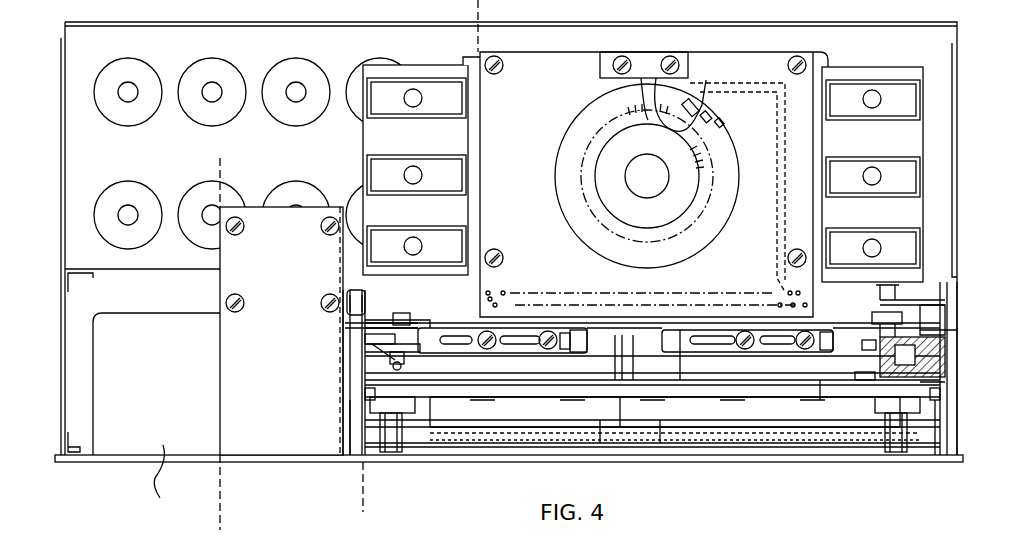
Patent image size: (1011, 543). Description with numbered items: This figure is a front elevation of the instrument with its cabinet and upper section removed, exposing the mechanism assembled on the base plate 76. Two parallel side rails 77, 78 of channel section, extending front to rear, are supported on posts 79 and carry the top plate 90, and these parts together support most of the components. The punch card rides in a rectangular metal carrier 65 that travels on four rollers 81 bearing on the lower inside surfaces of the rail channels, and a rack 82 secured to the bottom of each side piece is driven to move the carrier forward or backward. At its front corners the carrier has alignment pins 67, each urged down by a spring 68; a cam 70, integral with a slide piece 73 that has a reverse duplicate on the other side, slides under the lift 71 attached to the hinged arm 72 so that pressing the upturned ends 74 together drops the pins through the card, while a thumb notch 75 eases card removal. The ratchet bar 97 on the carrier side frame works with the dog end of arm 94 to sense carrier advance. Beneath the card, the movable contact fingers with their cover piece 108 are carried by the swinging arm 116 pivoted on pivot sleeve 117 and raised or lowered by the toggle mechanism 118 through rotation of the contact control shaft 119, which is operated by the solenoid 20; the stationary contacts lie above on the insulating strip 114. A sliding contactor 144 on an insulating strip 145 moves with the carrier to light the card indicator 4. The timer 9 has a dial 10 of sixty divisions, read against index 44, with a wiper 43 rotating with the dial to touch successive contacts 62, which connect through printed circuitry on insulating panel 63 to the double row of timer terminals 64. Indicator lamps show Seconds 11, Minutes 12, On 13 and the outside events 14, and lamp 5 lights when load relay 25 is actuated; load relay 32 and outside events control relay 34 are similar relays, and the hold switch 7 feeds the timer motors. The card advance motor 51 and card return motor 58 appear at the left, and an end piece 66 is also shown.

The card indicator 4 is at (922, 303).
The indicating lamp 5 is at (932, 319).
The hold switch 7 is at (212, 158).
The timer 9 is at (763, 68).
The dial 10 is at (470, 2).
The Seconds indicator 11 is at (418, 170).
The Minutes indicator 12 is at (413, 89).
The On indicator 13 is at (413, 237).
The outside-events indicators 14 is at (875, 108).
The solenoid 20 is at (263, 369).
The load relay 25 is at (152, 70).
The load relay 32 is at (895, 66).
The outside events control relay 34 is at (122, 180).
The wiper 43 is at (680, 95).
The index 44 is at (642, 106).
The card advance motor 51 is at (148, 496).
The card return motor 58 is at (148, 490).
The contacts 62 is at (714, 112).
The insulating panel 63 is at (518, 196).
The timer terminals 64 is at (503, 300).
The carrier 65 is at (852, 380).
The end cap 66 is at (588, 352).
The alignment pins 67 is at (868, 352).
The spring 68 is at (430, 352).
The cam 70 is at (365, 373).
The lift 71 is at (345, 323).
The hinged arm 72 is at (878, 337).
The slide piece 73 is at (537, 352).
The upturned ends 74 is at (572, 352).
The thumb notch 75 is at (655, 397).
The base plate 76 is at (478, 462).
The side rail 77 is at (360, 350).
The side rail 78 is at (945, 343).
The posts 79 is at (350, 412).
The rollers 81 is at (365, 340).
The rack 82 is at (868, 385).
The top plate 90 is at (957, 330).
The arm 94 is at (368, 315).
The ratchet bar 97 is at (400, 318).
The cover piece 108 is at (557, 422).
The insulating strip 114 is at (812, 352).
The swinging arm 116 is at (410, 405).
The pivot sleeve 117 is at (365, 393).
The toggle mechanism 118 is at (392, 460).
The contact control shaft 119 is at (848, 443).
The sliding contactor 144 is at (878, 302).
The insulating strip 145 is at (872, 318).